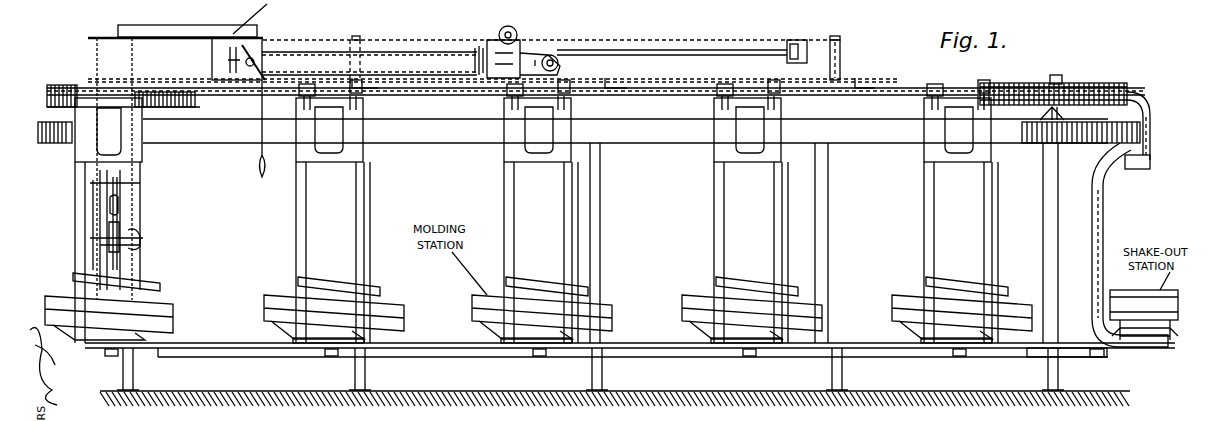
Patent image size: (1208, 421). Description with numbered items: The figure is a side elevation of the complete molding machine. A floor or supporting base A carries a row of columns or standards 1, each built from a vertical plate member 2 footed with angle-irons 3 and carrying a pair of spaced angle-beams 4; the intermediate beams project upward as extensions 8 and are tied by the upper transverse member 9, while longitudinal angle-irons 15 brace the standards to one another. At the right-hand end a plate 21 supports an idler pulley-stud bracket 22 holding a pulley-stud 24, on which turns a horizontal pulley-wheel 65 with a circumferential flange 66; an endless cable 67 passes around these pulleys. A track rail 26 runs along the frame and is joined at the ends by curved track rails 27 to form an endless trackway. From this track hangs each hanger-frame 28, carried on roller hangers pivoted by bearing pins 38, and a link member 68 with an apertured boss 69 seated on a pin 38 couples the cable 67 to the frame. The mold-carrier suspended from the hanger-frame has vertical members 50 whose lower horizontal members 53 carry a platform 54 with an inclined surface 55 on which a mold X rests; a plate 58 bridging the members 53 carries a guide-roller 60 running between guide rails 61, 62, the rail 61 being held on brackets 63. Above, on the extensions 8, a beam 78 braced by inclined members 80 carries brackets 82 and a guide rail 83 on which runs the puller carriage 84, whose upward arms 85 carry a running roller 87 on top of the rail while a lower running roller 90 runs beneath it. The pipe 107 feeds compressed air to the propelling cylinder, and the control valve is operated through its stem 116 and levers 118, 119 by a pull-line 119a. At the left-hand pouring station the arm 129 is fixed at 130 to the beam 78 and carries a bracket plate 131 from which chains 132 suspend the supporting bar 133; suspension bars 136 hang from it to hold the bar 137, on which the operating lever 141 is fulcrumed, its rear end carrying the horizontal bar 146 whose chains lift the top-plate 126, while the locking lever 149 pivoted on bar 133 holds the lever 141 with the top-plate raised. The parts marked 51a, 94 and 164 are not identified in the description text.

The columns or standards 1 is at (716, 243).
The metallic plate member 2 is at (133, 372).
The angle-irons or flanges 3 is at (608, 388).
The angle-beams 4 is at (176, 208).
The upper frame extensions 8 is at (370, 104).
The upper horizontal transverse member 9 is at (358, 80).
The longitudinally extending members 15 is at (890, 125).
The plate 21 is at (1068, 148).
The idler pulley-stud bracket 22 is at (1043, 140).
The pulley-stud 24 is at (1060, 76).
The track rail 26 is at (218, 143).
The curved track rails 27 is at (55, 143).
The hanger-frame member 28 is at (142, 152).
The upper bearing pin 38 is at (310, 345).
The vertical parallel members 50 is at (348, 237).
The bracket 51a is at (1118, 170).
The outwardly directed horizontal members 53 is at (1125, 350).
The platform 54 is at (385, 338).
The inclined supporting surface 55 is at (605, 330).
The horizontal plate 58 is at (512, 346).
The guide-roller 60 is at (331, 357).
The guide track rail 61 is at (210, 357).
The guide track rail 62 is at (190, 343).
The brackets 63 is at (842, 355).
The pulley-wheel 65 is at (172, 78).
The circumferential flange 66 is at (198, 102).
The cable 67 is at (876, 88).
The link member 68 is at (535, 131).
The apertured boss 69 is at (318, 90).
The beam member 78 is at (608, 40).
The inclined bracing members 80 is at (358, 38).
The brackets 82 is at (499, 35).
The guide-bar or rail 83 is at (716, 50).
The puller carriage 84 is at (540, 52).
The upwardly extending arms 85 is at (514, 28).
The running roller 87 is at (500, 45).
The running roller 90 is at (560, 58).
The hanger 94 is at (300, 84).
The pipe 107 is at (404, 50).
The valve stem 116 is at (248, 44).
The lever 118 is at (212, 50).
The lever 119 is at (262, 92).
The pull-line 119a is at (264, 176).
The top-plate 126 is at (165, 303).
The laterally projecting beam or arm 129 is at (188, 17).
The fixing point 130 is at (264, 17).
The bracket plate 131 is at (104, 37).
The chains 132 is at (98, 70).
The transverse horizontal supporting bar 133 is at (90, 183).
The suspension bars 136 is at (140, 246).
The transverse bar 137 is at (95, 238).
The operating lever 141 is at (120, 205).
The horizontal bar 146 is at (158, 222).
The locking lever 149 is at (120, 270).
The shelf 164 is at (396, 276).
The molds X is at (173, 310).
The supporting base A is at (261, 386).